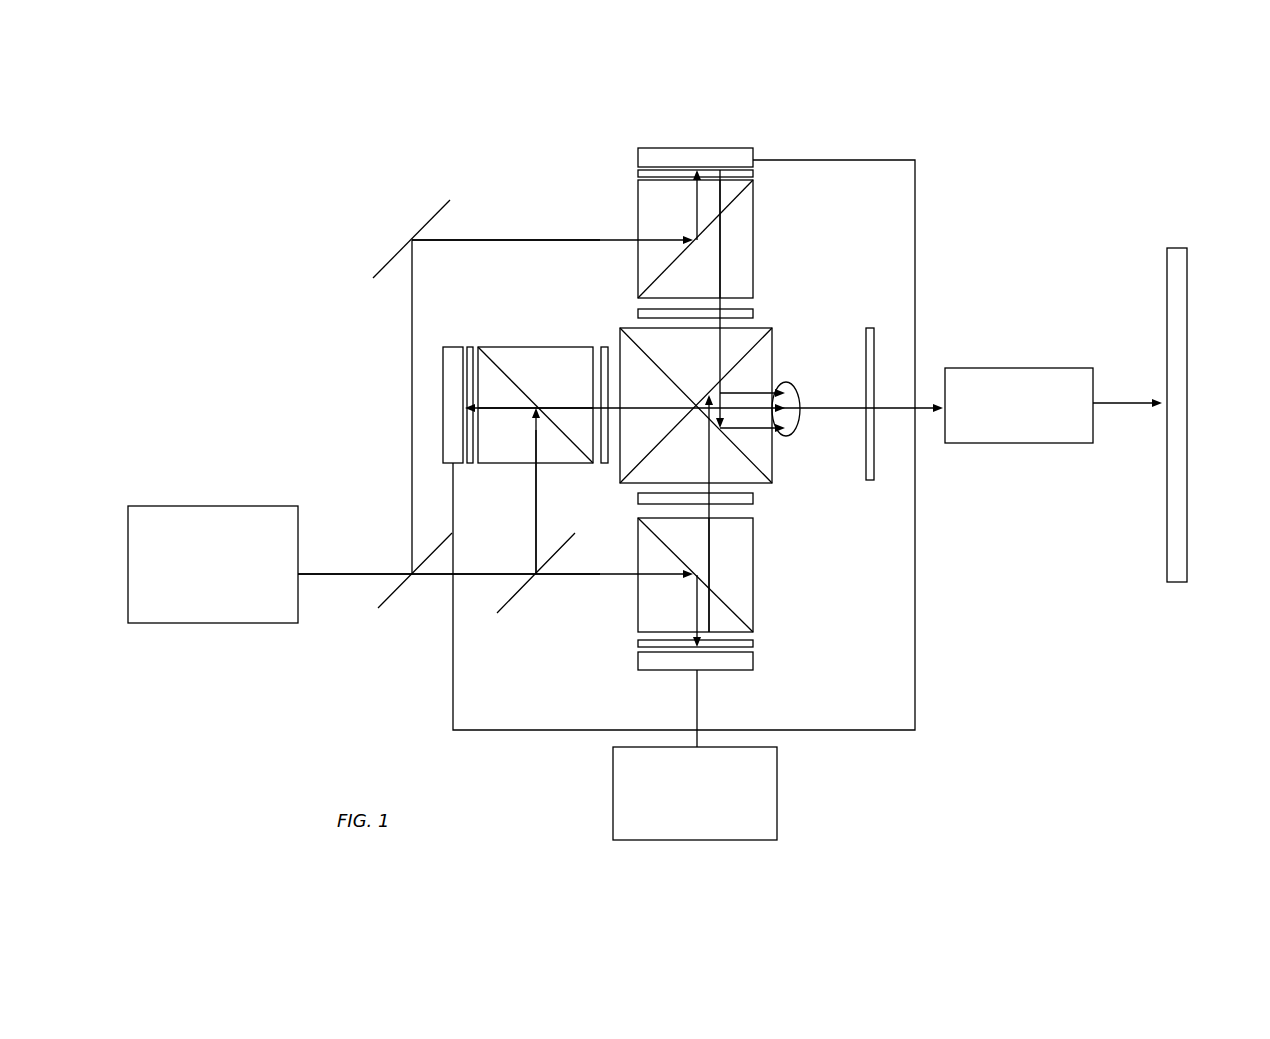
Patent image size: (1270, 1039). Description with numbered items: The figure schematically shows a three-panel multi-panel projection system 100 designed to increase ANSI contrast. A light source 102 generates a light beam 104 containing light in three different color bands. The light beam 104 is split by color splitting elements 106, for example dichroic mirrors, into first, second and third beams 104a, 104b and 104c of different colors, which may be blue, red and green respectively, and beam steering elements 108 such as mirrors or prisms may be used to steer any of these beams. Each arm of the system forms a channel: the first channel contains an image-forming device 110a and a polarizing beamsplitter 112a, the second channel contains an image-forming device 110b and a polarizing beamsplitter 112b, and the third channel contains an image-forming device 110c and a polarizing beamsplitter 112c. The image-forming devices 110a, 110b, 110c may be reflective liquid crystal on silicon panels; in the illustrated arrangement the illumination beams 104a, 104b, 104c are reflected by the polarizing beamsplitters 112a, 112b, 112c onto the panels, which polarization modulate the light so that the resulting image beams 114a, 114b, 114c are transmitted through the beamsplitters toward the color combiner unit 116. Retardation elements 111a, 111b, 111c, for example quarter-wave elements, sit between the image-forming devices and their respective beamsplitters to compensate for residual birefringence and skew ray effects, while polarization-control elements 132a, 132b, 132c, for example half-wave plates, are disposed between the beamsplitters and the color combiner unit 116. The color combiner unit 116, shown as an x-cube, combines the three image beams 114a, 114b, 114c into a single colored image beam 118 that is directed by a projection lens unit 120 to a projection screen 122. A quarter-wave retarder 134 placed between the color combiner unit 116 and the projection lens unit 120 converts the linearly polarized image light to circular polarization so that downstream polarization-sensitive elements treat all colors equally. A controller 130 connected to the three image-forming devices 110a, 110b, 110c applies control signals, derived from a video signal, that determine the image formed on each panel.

The multi-panel projection system 100 is at (210, 180).
The light source 102 is at (218, 623).
The light beam 104 is at (340, 572).
The first beam 104a is at (540, 242).
The second beam 104b is at (598, 576).
The third beam 104c is at (533, 490).
The color splitting elements 106 is at (378, 608).
The beam steering elements 108 is at (428, 220).
The first image-forming device 110a is at (698, 145).
The second image-forming device 110b is at (743, 670).
The third image-forming device 110c is at (443, 400).
The first retardation element 111a is at (637, 173).
The second retardation element 111b is at (753, 644).
The third retardation element 111c is at (473, 405).
The first polarizing beamsplitter 112a is at (753, 215).
The second polarizing beamsplitter 112b is at (753, 610).
The third polarizing beamsplitter 112c is at (533, 347).
The first image beam 114a is at (722, 273).
The second image beam 114b is at (712, 545).
The third image beam 114c is at (570, 412).
The color combiner unit 116 is at (773, 353).
The colored image beam 118 is at (804, 417).
The projection lens unit 120 is at (1043, 368).
The projection screen 122 is at (1187, 550).
The controller 130 is at (777, 820).
The first polarization-control element 132a is at (753, 313).
The second polarization-control element 132b is at (753, 500).
The third polarization-control element 132c is at (602, 467).
The quarter-wave retarder 134 is at (875, 460).